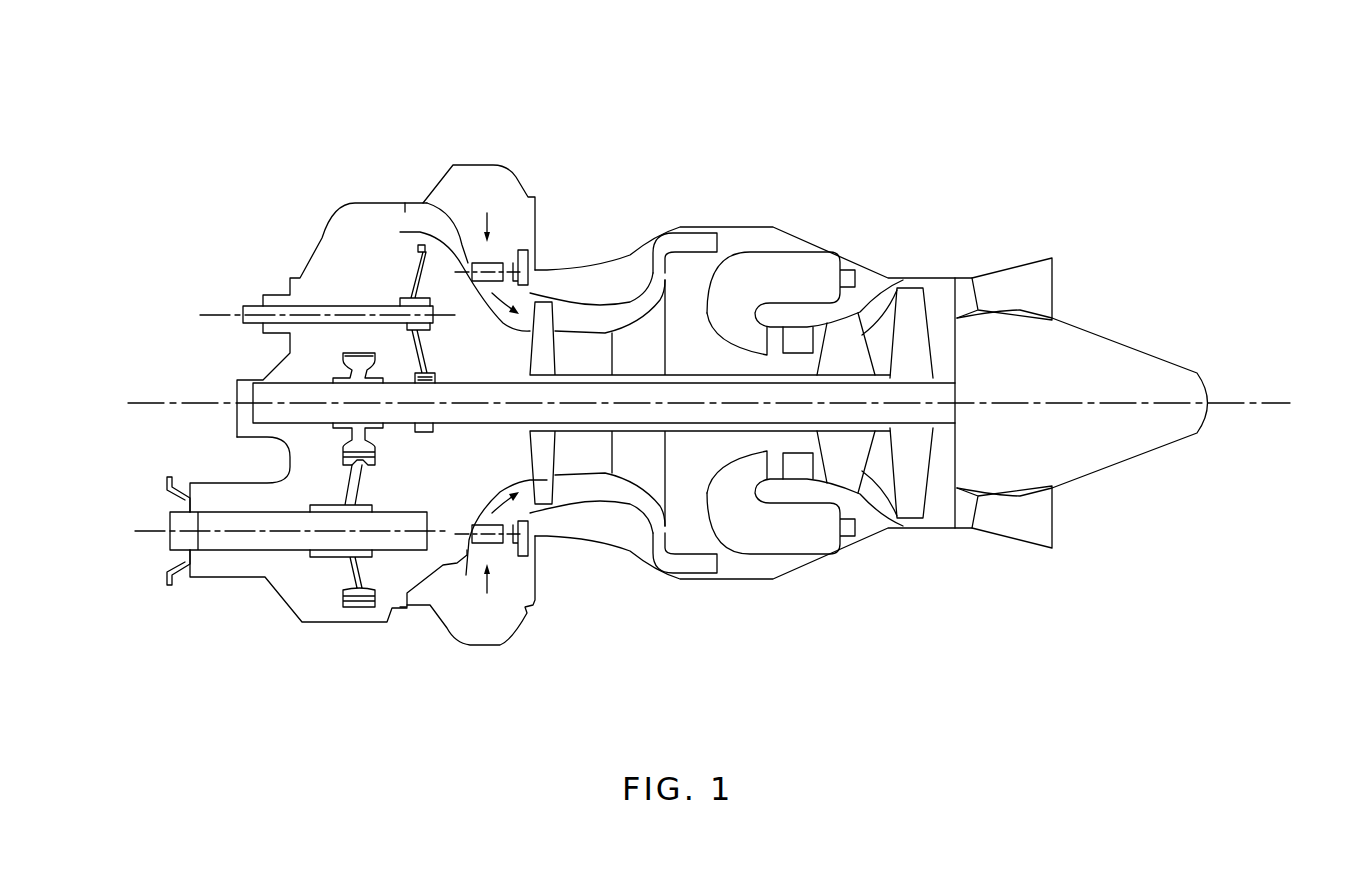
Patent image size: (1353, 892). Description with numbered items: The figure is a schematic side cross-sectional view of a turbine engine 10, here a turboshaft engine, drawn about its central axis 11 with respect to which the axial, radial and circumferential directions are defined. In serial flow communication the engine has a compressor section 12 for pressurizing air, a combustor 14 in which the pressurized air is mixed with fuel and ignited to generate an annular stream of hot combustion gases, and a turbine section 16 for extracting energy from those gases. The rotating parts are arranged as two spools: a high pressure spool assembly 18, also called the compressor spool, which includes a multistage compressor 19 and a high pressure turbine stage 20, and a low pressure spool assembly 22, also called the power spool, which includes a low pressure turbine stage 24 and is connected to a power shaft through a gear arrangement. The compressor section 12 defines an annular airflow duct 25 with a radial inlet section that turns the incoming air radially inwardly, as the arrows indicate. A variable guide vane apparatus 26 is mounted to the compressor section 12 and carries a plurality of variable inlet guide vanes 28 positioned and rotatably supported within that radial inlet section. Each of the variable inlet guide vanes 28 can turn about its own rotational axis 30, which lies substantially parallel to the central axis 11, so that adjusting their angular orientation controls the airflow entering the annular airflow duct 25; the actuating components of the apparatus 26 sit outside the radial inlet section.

The turbine engine 10 is at (805, 163).
The central axis 11 is at (174, 403).
The compressor section 12 is at (619, 275).
The combustor 14 is at (774, 270).
The turbine section 16 is at (938, 252).
The high pressure spool assembly 18 is at (697, 452).
The multistage compressor 19 is at (547, 490).
The high pressure turbine stage 20 is at (840, 457).
The low pressure spool assembly 22 is at (457, 413).
The low pressure turbine stage 24 is at (915, 483).
The annular airflow duct 25 is at (587, 318).
The variable guide vane apparatus 26 is at (512, 218).
The variable inlet guide vanes 28 is at (480, 262).
The rotational axis 30 is at (355, 215).